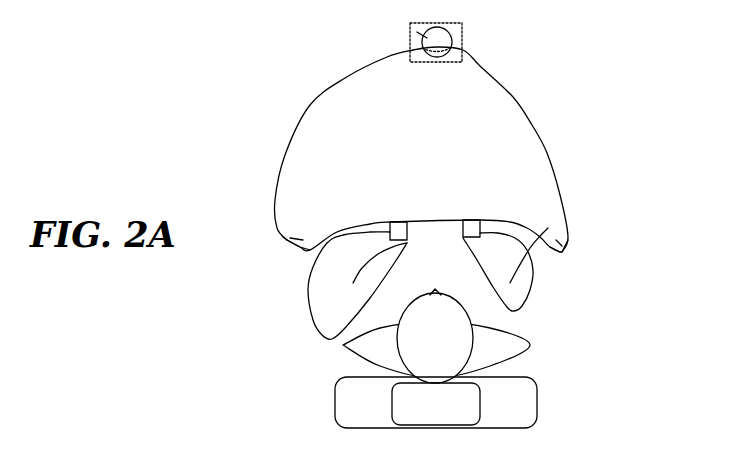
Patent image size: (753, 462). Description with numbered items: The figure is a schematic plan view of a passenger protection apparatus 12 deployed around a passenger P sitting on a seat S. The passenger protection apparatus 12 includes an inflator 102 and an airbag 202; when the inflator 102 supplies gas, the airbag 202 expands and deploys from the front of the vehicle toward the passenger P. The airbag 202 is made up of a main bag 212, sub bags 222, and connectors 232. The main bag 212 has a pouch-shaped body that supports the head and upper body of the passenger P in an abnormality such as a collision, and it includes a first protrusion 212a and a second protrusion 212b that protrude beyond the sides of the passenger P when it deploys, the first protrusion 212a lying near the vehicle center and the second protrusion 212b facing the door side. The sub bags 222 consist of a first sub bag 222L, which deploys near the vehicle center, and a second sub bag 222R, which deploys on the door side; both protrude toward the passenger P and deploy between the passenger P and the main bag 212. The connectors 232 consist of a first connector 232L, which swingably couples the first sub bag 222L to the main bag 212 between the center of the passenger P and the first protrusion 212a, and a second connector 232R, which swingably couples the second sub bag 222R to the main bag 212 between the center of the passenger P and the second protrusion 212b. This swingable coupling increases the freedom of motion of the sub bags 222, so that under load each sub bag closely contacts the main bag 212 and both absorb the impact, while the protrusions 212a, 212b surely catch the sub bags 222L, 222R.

The passenger protection apparatus 12 is at (292, 42).
The inflator 102 is at (410, 28).
The airbag 202 is at (668, 67).
The main bag 212 is at (486, 110).
The first protrusion 212a is at (283, 240).
The second protrusion 212b is at (568, 246).
The connectors 232 is at (628, 119).
The first connector 232L is at (402, 222).
The second connector 232R is at (478, 222).
The sub bags 222 is at (630, 182).
The first sub bag 222L is at (410, 242).
The second sub bag 222R is at (483, 234).
The passenger P is at (347, 352).
The seat S is at (357, 410).